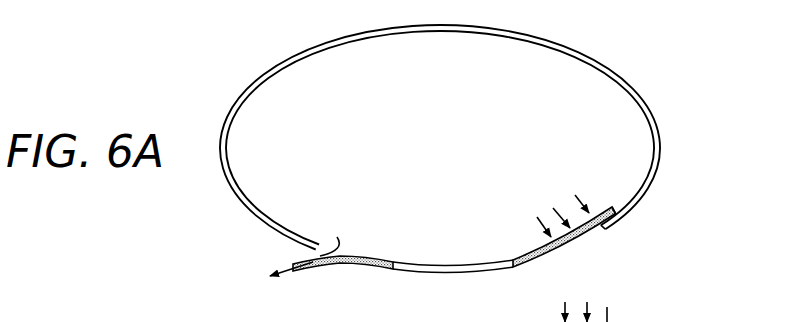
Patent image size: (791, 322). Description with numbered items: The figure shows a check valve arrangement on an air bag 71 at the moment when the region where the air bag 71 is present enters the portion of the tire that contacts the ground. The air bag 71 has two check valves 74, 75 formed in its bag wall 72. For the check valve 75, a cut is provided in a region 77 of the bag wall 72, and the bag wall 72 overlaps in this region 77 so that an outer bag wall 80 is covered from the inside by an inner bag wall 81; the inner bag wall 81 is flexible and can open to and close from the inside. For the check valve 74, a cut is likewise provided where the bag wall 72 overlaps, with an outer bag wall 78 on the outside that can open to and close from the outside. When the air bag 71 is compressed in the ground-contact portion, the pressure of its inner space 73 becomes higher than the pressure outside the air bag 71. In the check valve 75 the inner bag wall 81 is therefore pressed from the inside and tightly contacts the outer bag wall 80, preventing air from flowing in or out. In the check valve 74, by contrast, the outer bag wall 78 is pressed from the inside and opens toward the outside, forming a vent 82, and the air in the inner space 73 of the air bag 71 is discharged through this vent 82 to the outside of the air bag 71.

The air bag 71 is at (496, 135).
The bag wall 72 is at (487, 137).
The inner space 73 is at (628, 162).
The check valve 74 is at (320, 271).
The check valve 75 is at (582, 241).
The region 77 is at (638, 230).
The outer bag wall 78 is at (303, 279).
The outer bag wall 80 is at (617, 230).
The inner bag wall 81 is at (603, 212).
The vent 82 is at (325, 250).